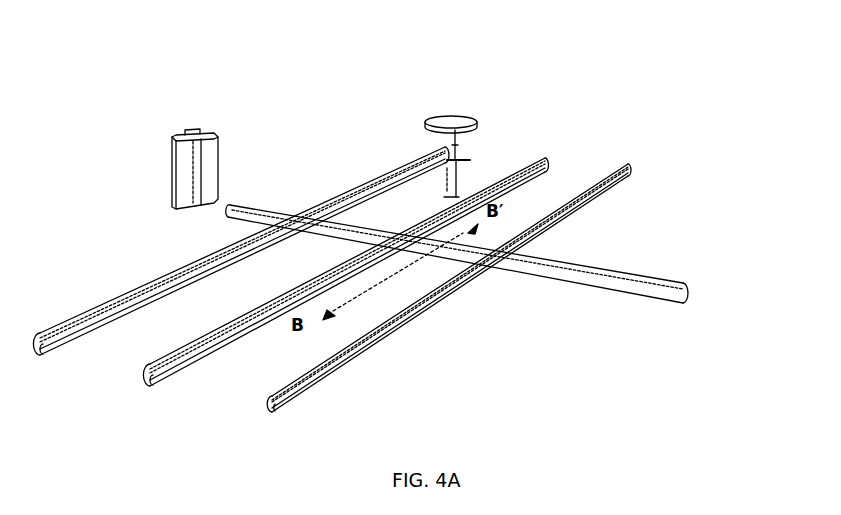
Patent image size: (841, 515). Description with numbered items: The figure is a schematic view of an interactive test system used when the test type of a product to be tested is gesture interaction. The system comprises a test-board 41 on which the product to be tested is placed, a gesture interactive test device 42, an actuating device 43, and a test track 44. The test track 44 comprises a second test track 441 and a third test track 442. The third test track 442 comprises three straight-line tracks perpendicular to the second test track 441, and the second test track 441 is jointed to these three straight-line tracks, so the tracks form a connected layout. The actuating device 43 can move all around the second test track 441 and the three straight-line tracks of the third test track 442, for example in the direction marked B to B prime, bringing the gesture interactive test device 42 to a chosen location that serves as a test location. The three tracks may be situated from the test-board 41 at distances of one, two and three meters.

The test-board 41 is at (200, 133).
The gesture interactive test device 42 is at (478, 115).
The actuating device 43 is at (452, 160).
The test track 44 is at (423, 279).
The second test track 441 is at (612, 275).
The third test track 442 is at (373, 344).